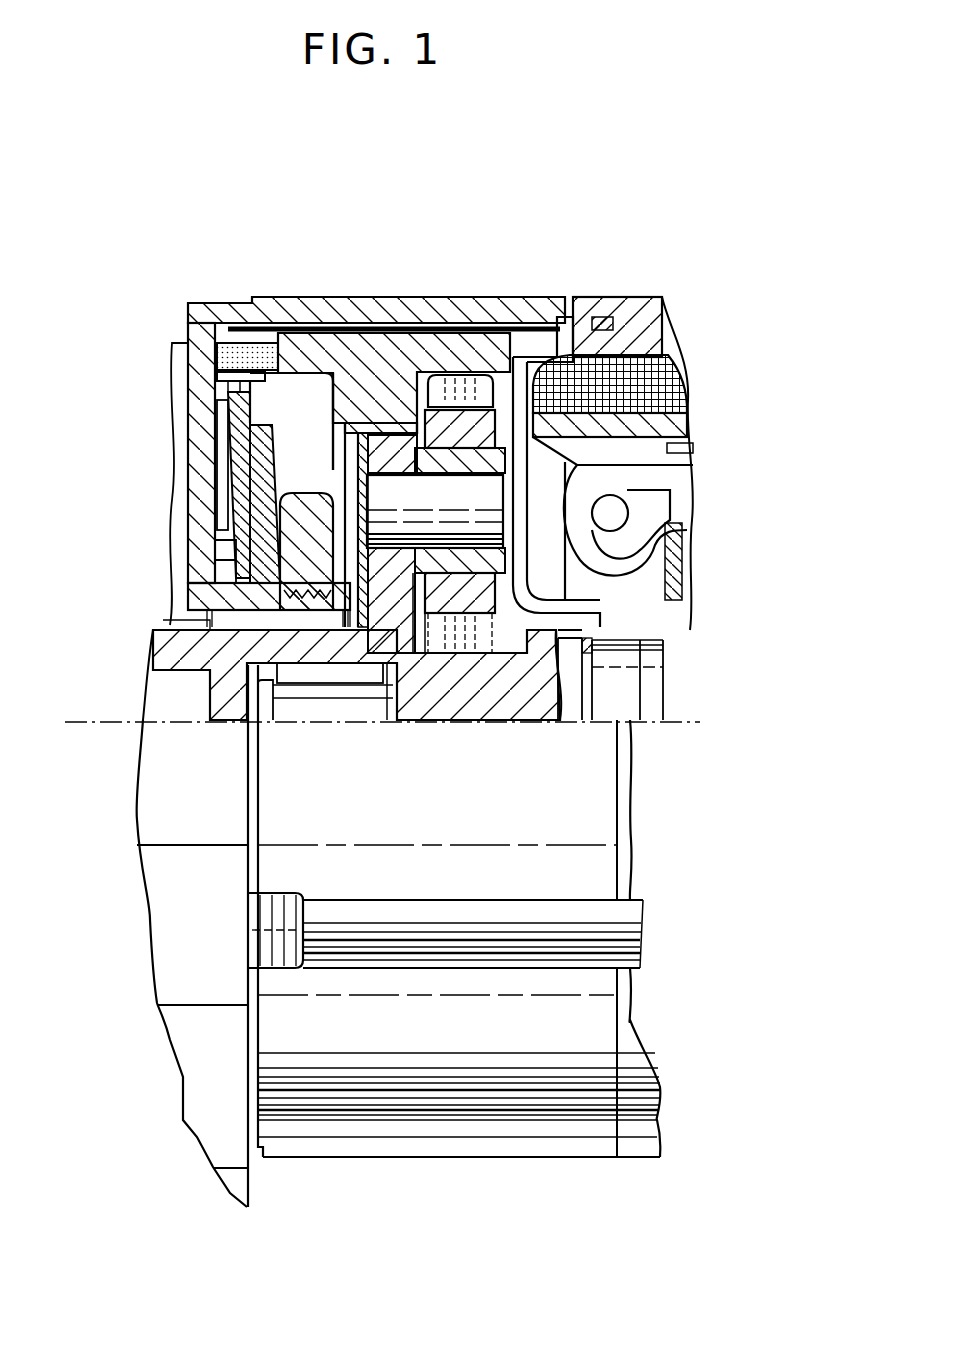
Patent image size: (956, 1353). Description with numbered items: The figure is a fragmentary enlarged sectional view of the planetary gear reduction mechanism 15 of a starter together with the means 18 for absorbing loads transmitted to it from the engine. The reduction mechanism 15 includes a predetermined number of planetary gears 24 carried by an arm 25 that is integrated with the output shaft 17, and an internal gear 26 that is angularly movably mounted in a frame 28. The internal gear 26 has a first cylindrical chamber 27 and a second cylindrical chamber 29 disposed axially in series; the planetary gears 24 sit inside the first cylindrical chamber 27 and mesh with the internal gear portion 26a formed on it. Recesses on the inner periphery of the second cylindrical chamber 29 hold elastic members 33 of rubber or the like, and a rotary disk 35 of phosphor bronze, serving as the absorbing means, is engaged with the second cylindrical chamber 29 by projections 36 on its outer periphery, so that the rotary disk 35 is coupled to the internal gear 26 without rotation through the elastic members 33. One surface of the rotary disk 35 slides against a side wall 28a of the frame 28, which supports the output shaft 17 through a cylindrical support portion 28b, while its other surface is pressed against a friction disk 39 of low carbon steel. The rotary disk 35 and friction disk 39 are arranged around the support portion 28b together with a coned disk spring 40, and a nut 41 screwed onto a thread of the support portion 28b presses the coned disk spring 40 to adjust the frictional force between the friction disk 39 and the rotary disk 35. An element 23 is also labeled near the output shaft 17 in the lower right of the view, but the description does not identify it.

The planetary gear reduction mechanism 15 is at (458, 294).
The output shaft 17 is at (163, 697).
The means for absorbing loads 18 is at (258, 389).
The bearing 23 is at (558, 655).
The planetary gears 24 is at (478, 402).
The arm 25 is at (388, 445).
The internal gear 26 is at (326, 342).
The internal gear portion 26a is at (417, 387).
The first cylindrical chamber 27 is at (527, 297).
The frame 28 is at (410, 297).
The side wall of frame 28a is at (200, 460).
The cylindrical support portion 28b is at (190, 613).
The second cylindrical chamber 29 is at (297, 308).
The elastic member 33 is at (215, 362).
The rotary disk 35 is at (228, 430).
The projections 36 is at (217, 385).
The friction disk 39 is at (217, 480).
The coned disk spring 40 is at (217, 537).
The nut 41 is at (260, 590).